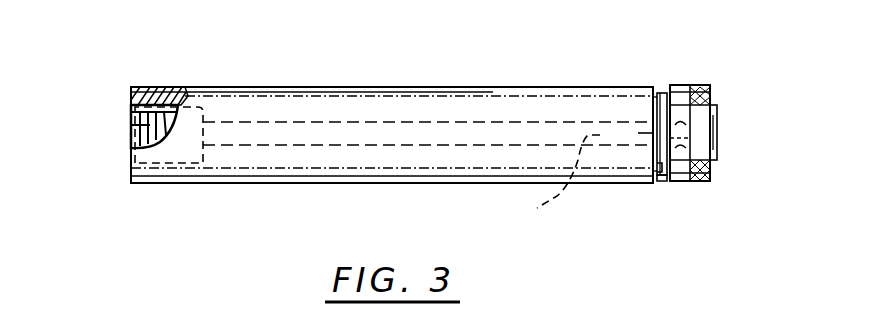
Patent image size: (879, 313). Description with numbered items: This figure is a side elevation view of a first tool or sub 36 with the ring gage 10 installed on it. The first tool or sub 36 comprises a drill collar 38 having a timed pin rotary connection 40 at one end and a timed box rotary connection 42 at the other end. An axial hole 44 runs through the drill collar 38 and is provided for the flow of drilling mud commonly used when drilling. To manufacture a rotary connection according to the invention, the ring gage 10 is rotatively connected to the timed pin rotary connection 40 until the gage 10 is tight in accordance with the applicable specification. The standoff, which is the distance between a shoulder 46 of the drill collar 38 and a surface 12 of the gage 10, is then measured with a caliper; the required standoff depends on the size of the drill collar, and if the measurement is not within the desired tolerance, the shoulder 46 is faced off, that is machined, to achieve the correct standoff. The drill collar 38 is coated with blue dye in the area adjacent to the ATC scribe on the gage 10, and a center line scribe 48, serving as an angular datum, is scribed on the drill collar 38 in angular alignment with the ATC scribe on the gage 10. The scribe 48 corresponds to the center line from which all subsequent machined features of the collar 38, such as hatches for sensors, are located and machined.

The ring gage 10 is at (698, 85).
The surface 12 is at (659, 178).
The first tool or sub 36 is at (490, 87).
The drill collar 38 is at (223, 102).
The timed pin rotary connection 40 is at (660, 92).
The timed box rotary connection 42 is at (131, 121).
The axial hole 44 is at (537, 208).
The shoulder 46 is at (657, 168).
The center line scribe 48 is at (643, 134).